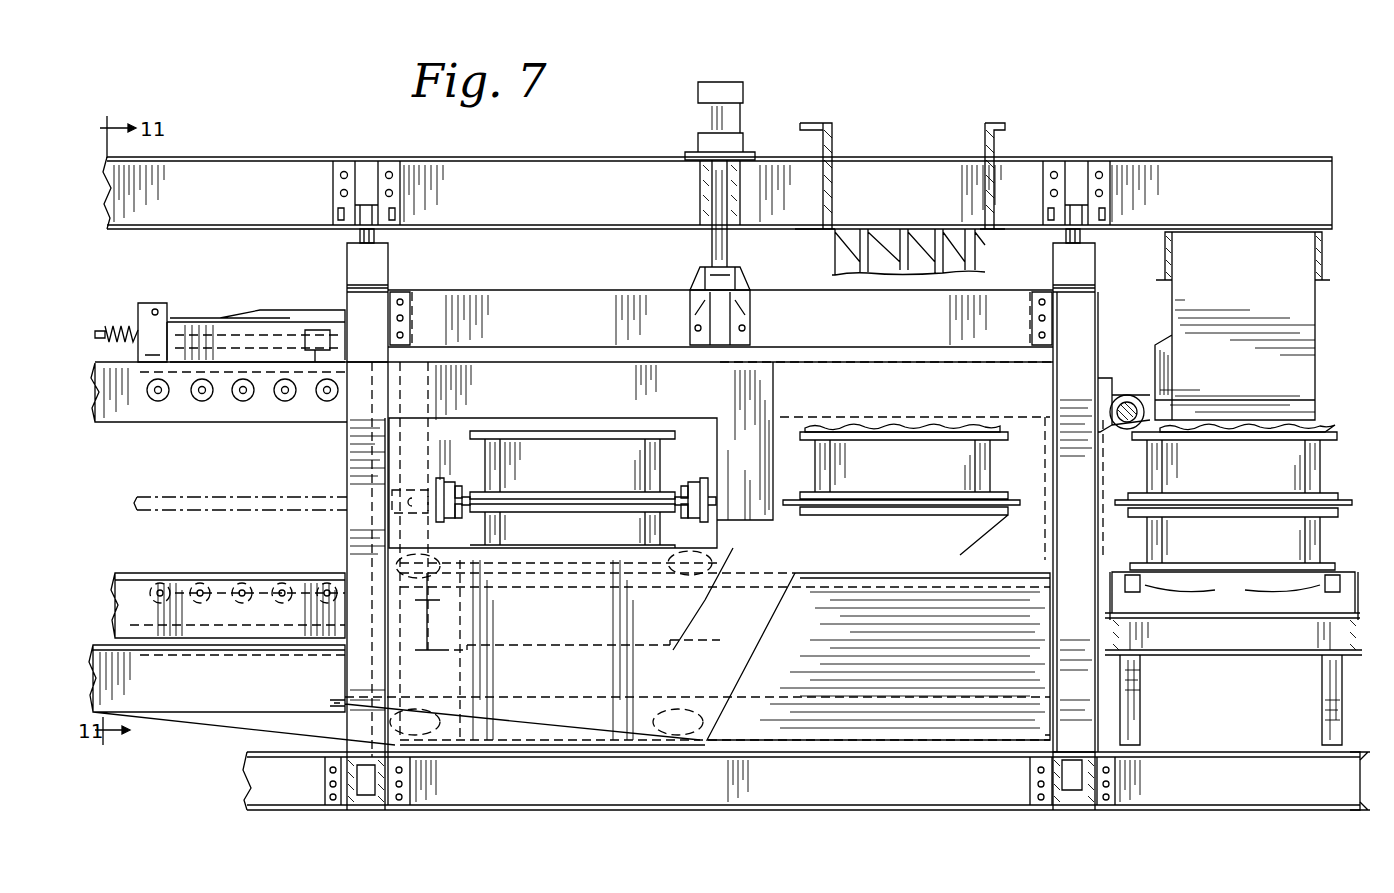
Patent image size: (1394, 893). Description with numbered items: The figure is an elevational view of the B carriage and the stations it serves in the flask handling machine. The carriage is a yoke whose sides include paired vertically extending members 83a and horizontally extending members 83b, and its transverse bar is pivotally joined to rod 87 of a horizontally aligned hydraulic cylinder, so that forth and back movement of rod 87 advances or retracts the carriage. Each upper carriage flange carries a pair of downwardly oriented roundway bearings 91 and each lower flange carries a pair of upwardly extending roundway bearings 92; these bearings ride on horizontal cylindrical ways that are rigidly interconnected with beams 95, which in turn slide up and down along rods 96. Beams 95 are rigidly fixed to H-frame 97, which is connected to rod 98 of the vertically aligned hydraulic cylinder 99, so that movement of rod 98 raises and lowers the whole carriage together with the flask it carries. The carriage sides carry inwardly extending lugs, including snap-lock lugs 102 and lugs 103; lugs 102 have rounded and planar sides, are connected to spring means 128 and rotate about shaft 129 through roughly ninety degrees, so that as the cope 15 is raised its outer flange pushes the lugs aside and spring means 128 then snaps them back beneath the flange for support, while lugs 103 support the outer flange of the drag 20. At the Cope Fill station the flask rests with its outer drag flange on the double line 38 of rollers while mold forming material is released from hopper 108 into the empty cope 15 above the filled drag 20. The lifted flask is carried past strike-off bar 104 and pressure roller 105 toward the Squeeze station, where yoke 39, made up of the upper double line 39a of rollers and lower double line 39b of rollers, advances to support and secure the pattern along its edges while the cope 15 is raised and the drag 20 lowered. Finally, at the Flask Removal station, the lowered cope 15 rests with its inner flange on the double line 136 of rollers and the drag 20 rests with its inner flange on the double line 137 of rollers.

The cope 15 is at (580, 467).
The drag 20 is at (574, 541).
The double line of rollers 38 is at (1190, 594).
The yoke 39 is at (438, 482).
The upper double line of rollers 39a is at (460, 488).
The lower double line of rollers 39b is at (459, 516).
The vertically extending member 83a is at (762, 443).
The horizontally extending member 83b is at (520, 372).
The rod 87 is at (260, 490).
The roundway bearings 91 is at (425, 580).
The roundway bearings 92 is at (440, 736).
The beams 95 is at (347, 268).
The rods 96 is at (360, 238).
The H-frame 97 is at (515, 290).
The rod 98 is at (728, 245).
The hydraulic cylinder 99 is at (740, 110).
The snap-lock lugs 102 is at (187, 300).
The lugs 103 is at (213, 652).
The strike-off bar 104 is at (1152, 365).
The pressure roller 105 is at (1130, 395).
The hopper 108 is at (1300, 303).
The spring means 128 is at (125, 322).
The shaft 129 is at (205, 320).
The double line of rollers 136 is at (158, 402).
The double line of rollers 137 is at (170, 575).